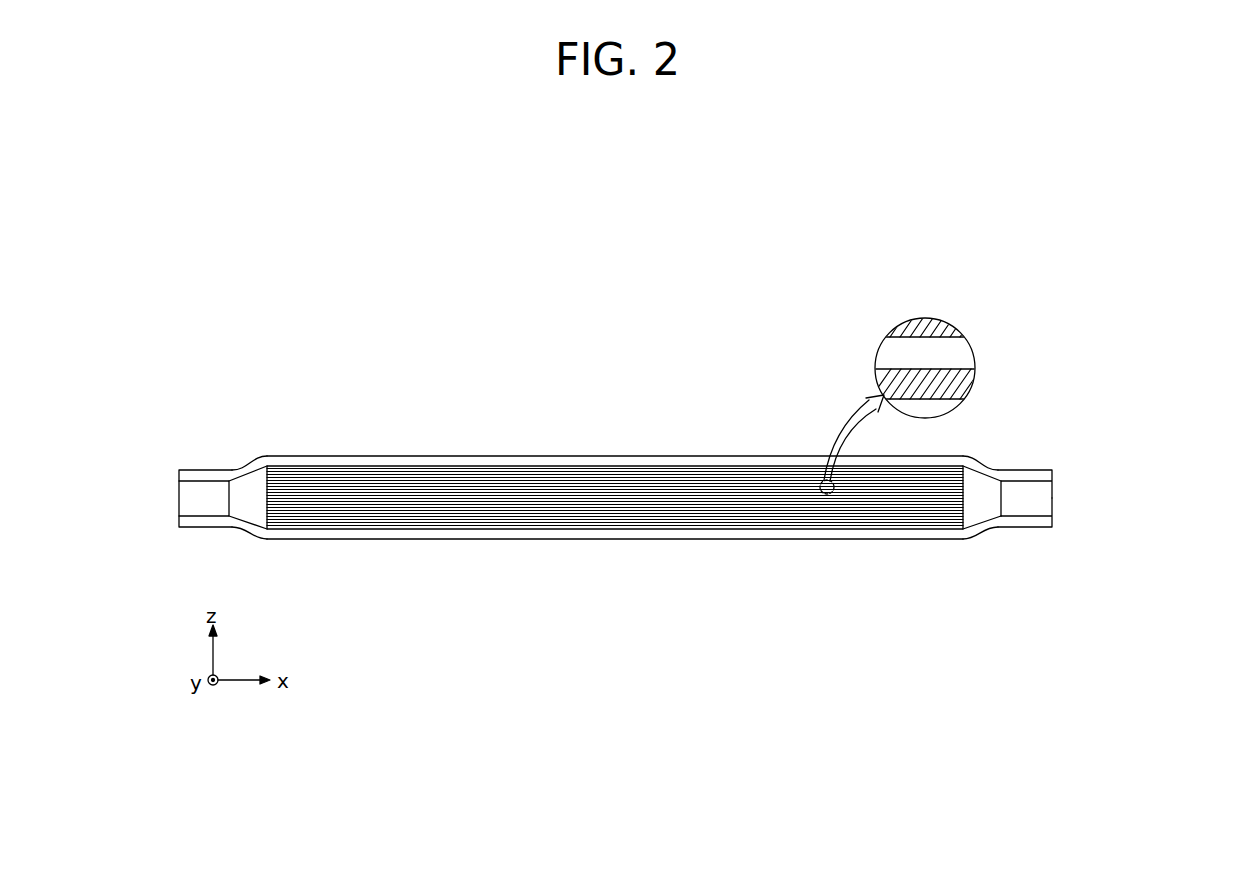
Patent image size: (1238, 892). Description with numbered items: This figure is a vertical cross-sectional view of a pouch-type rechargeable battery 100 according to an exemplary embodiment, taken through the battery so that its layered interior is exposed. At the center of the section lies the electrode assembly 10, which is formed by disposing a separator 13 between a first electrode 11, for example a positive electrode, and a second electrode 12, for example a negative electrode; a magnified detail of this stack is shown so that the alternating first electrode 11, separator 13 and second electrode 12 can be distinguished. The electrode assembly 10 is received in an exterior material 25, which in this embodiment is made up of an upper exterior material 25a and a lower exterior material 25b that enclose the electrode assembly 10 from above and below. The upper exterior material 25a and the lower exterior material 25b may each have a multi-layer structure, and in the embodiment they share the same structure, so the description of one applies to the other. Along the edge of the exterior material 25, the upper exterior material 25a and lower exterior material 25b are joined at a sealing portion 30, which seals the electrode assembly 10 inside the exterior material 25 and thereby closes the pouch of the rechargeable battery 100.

The pouch-type rechargeable battery 100 is at (558, 351).
The electrode assembly 10 is at (705, 470).
The first electrode 11 is at (947, 325).
The second electrode 12 is at (962, 382).
The separator 13 is at (958, 350).
The exterior material 25 is at (1088, 499).
The upper exterior material 25a is at (1037, 476).
The lower exterior material 25b is at (1037, 521).
The sealing portion 30 is at (193, 500).